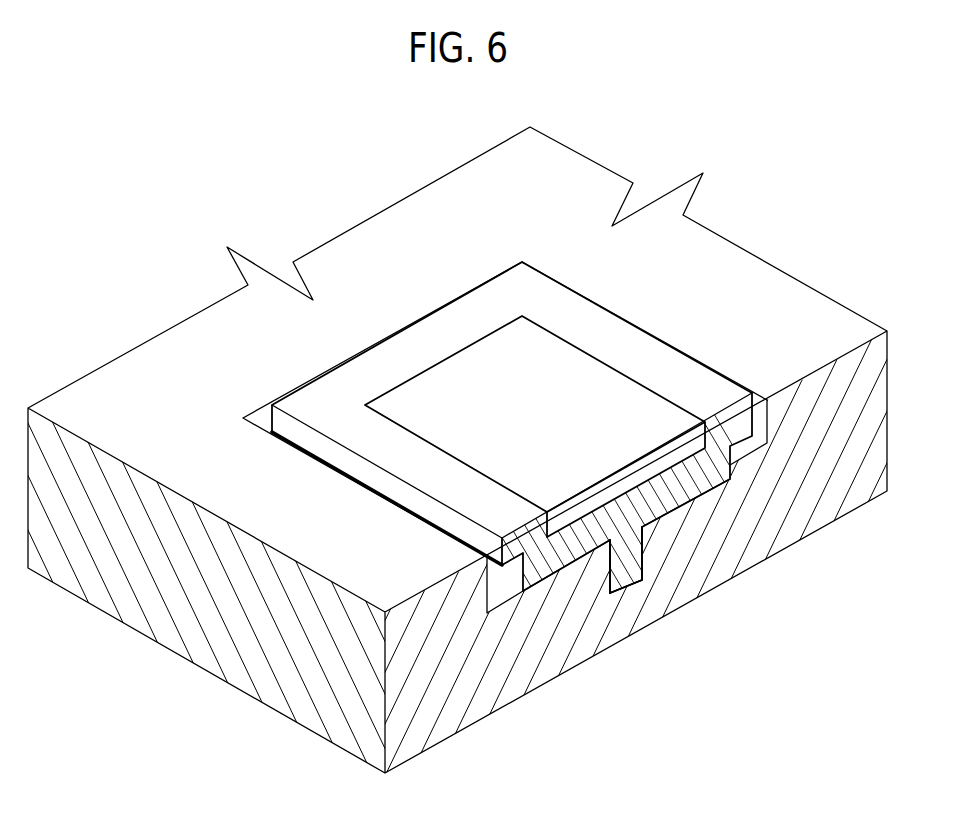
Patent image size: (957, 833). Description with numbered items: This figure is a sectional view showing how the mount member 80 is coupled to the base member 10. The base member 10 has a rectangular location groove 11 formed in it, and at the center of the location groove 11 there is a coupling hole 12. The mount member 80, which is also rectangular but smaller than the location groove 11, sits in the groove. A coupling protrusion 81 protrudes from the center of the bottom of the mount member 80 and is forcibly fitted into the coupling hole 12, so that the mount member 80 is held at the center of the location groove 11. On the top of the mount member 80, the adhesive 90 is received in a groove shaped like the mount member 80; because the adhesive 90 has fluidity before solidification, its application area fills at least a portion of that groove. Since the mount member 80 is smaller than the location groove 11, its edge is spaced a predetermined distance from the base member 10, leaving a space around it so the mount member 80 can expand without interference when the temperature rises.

The base member 10 is at (753, 283).
The location groove 11 is at (732, 452).
The coupling hole 12 is at (614, 582).
The mount member 80 is at (428, 333).
The coupling protrusion 81 is at (630, 565).
The adhesive 90 is at (403, 400).